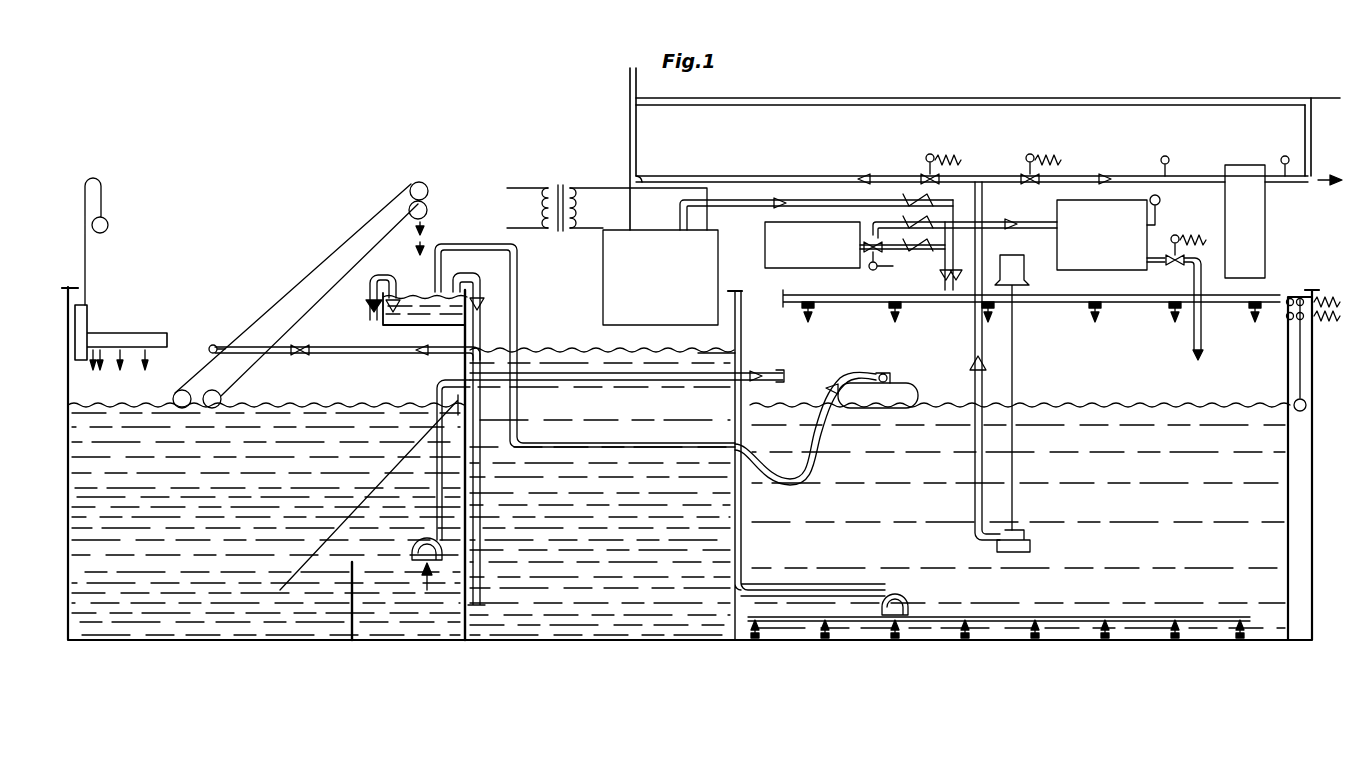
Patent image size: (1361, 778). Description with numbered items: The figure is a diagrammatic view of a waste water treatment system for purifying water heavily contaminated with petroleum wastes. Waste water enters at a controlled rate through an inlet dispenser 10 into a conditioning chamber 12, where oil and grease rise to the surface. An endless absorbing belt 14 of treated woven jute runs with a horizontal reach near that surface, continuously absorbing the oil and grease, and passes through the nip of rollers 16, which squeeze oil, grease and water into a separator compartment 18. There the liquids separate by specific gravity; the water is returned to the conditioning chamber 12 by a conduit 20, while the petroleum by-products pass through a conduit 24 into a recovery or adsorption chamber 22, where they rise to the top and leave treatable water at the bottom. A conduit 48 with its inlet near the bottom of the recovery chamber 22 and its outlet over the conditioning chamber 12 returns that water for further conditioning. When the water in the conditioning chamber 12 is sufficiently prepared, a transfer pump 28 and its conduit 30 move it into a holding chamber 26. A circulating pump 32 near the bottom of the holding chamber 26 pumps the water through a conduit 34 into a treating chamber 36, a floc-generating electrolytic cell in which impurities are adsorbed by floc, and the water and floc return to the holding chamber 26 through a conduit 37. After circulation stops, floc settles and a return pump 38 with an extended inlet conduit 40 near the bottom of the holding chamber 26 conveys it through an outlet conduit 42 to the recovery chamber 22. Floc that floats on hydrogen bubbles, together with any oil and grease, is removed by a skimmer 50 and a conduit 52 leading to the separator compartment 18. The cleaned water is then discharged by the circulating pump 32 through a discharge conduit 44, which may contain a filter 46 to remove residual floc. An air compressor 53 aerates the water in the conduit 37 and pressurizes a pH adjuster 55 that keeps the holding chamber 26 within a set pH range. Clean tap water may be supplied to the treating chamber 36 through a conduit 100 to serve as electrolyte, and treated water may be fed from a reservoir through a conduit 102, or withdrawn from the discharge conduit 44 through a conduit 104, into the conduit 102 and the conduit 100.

The inlet dispenser 10 is at (133, 333).
The conditioning chamber 12 is at (209, 617).
The endless absorbing belt 14 is at (243, 372).
The rollers 16 is at (429, 192).
The separator compartment 18 is at (428, 322).
The conduit 20 is at (370, 292).
The recovery or adsorption chamber 22 is at (610, 638).
The conduit 24 is at (478, 291).
The holding chamber 26 is at (1274, 588).
The transfer pump 28 is at (420, 576).
The conduit 30 is at (558, 370).
The circulating pump 32 is at (1030, 548).
The conduit 34 is at (975, 505).
The treating chamber 36 is at (602, 261).
The conduit 37 is at (1020, 318).
The return pump 38 is at (908, 598).
The extended inlet conduit 40 is at (994, 618).
The outlet conduit 42 is at (822, 588).
The discharge conduit 44 is at (1070, 176).
The filter 46 is at (1265, 236).
The conduit 48 is at (376, 354).
The skimmer 50 is at (908, 388).
The conduit 52 is at (518, 312).
The air compressor 53 is at (765, 238).
The pH adjuster 55 is at (1108, 269).
The conduit 100 is at (630, 136).
The conduit 102 is at (908, 103).
The conduit 104 is at (1305, 135).